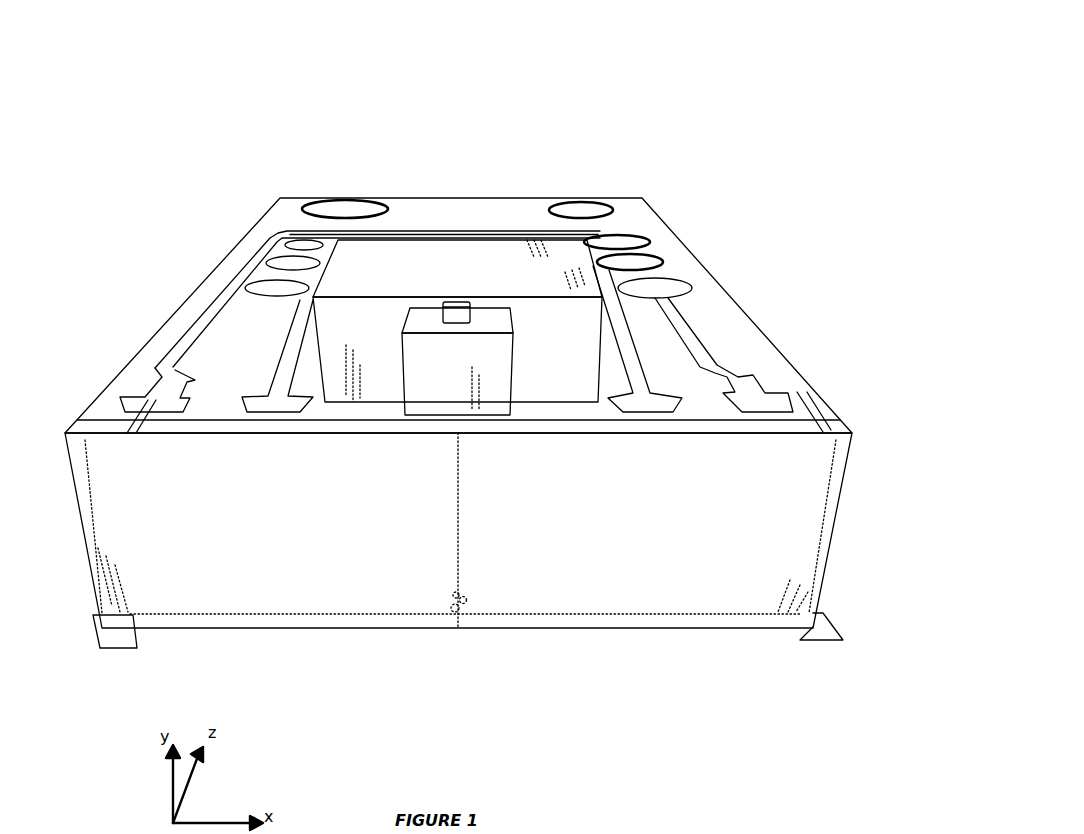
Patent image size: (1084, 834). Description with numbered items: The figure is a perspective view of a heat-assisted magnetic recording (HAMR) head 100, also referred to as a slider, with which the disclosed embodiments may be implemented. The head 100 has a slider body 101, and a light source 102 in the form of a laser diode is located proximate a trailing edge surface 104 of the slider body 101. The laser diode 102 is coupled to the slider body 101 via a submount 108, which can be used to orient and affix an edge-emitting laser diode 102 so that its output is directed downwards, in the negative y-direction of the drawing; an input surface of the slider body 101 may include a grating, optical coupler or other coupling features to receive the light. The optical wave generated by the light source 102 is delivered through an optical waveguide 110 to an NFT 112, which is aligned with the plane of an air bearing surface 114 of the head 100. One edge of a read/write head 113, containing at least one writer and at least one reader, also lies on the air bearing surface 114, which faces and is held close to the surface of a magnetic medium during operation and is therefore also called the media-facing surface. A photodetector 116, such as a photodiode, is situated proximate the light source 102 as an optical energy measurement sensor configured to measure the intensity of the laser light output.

The HAMR head 100 is at (626, 84).
The slider body 101 is at (273, 217).
The light source 102 is at (513, 360).
The trailing edge surface 104 is at (118, 650).
The submount 108 is at (387, 248).
The optical waveguide 110 is at (458, 517).
The NFT 112 is at (456, 615).
The read/write head 113 is at (465, 615).
The air bearing surface 114 is at (808, 640).
The photodetector 116 is at (462, 300).